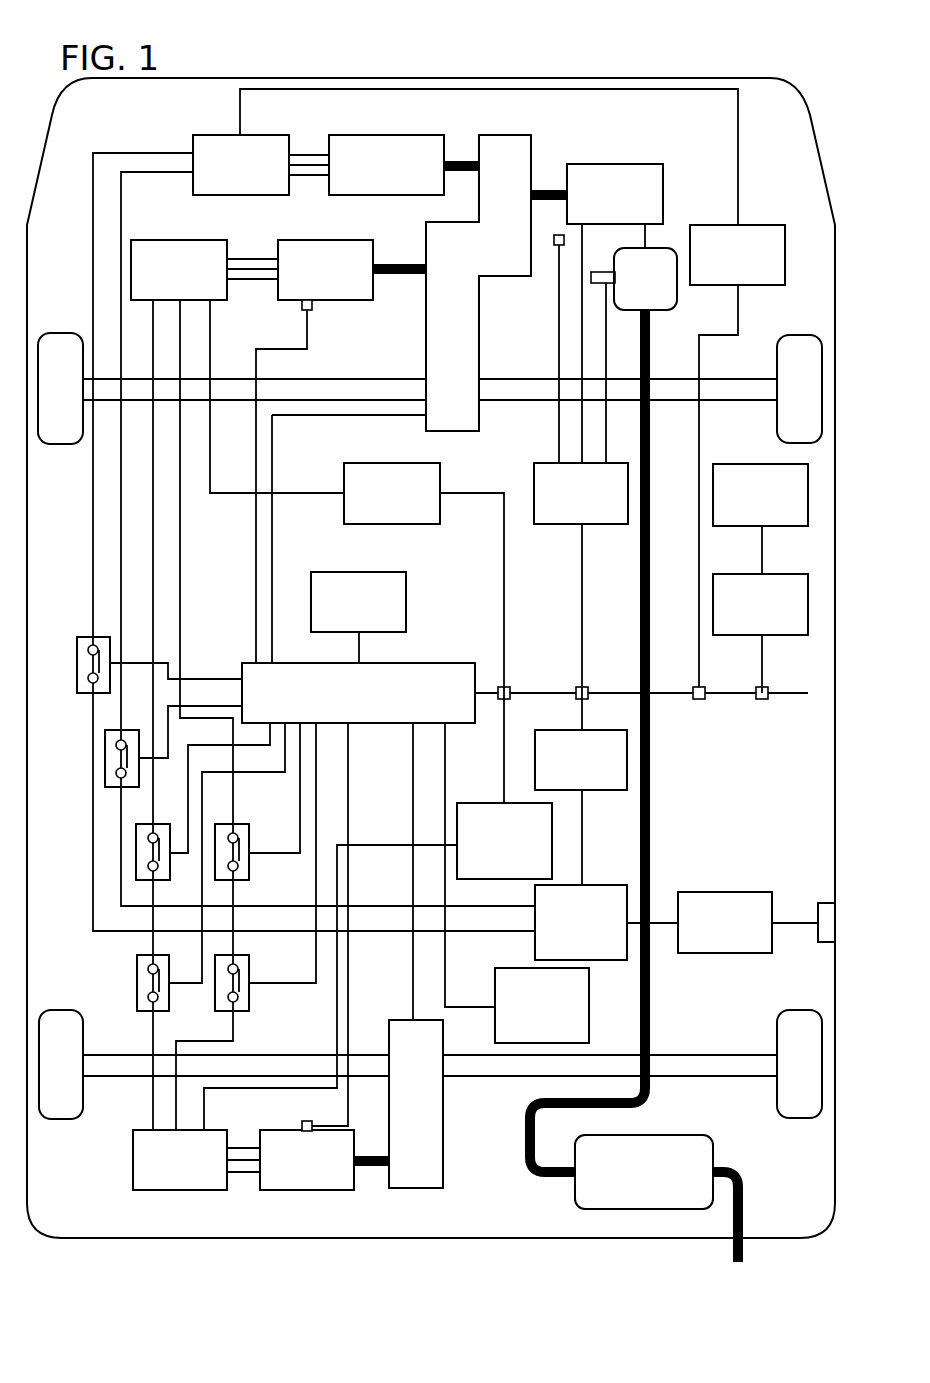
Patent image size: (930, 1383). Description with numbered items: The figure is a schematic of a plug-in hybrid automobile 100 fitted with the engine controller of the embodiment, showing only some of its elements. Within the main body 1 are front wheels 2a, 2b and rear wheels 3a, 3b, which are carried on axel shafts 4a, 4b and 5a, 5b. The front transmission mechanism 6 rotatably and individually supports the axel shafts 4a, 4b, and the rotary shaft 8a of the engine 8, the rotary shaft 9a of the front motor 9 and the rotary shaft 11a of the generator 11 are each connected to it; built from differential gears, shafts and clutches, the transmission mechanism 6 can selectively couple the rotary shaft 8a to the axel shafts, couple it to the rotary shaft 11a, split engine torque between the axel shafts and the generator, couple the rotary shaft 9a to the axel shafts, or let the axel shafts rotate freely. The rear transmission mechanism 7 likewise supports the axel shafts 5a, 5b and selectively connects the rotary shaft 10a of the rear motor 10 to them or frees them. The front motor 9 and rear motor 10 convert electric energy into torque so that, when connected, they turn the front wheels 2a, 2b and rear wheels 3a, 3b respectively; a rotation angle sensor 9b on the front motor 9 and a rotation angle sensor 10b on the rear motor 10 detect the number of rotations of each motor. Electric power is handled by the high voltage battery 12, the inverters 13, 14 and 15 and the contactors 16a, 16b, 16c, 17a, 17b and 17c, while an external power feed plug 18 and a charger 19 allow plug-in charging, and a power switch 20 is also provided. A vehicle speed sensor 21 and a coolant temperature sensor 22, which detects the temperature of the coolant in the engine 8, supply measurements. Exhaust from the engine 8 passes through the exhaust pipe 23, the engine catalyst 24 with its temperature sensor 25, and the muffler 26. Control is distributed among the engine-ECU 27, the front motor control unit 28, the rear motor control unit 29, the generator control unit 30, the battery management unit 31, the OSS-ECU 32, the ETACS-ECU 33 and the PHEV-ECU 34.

The automobile 100 is at (692, 70).
The main body 1 is at (563, 76).
The front wheel 2a is at (59, 333).
The front wheel 2b is at (797, 335).
The rear wheel 3a is at (61, 1010).
The rear wheel 3b is at (794, 1010).
The axel shaft 4a is at (232, 379).
The axel shaft 4b is at (671, 403).
The axel shaft 5a is at (109, 1055).
The axel shaft 5b is at (693, 1055).
The transmission mechanism 6 is at (480, 330).
The transmission mechanism 7 is at (443, 1125).
The engine 8 is at (641, 164).
The rotary shaft 8a is at (551, 190).
The front motor 9 is at (323, 240).
The rotary shaft 9a is at (394, 264).
The rotation angle sensor 9b is at (313, 309).
The rear motor 10 is at (288, 1190).
The rotary shaft 10a is at (375, 1167).
The rotation angle sensor 10b is at (302, 1125).
The generator 11 is at (396, 135).
The rotary shaft 11a is at (458, 160).
The high voltage battery 12 is at (608, 885).
The inverter 13 is at (163, 240).
The inverter 14 is at (133, 1150).
The inverter 15 is at (273, 135).
The contactor 16a is at (136, 846).
The contactor 16b is at (165, 1012).
The contactor 16c is at (78, 637).
The contactor 17a is at (249, 825).
The contactor 17b is at (249, 1001).
The contactor 17c is at (105, 751).
The external power feed plug 18 is at (822, 903).
The charger 19 is at (722, 892).
The power switch 20 is at (737, 464).
The vehicle speed sensor 21 is at (500, 968).
The coolant temperature sensor 22 is at (553, 241).
The exhaust pipe 23 is at (649, 242).
The engine catalyst 24 is at (677, 296).
The temperature sensor 25 is at (600, 272).
The muffler 26 is at (681, 1135).
The engine-ECU 27 is at (553, 524).
The front motor control unit 28 is at (382, 455).
The rear motor control unit 29 is at (470, 803).
The generator control unit 30 is at (765, 218).
The battery management unit 31 is at (572, 730).
The OSS-ECU 32 is at (797, 566).
The ETACS-ECU 33 is at (406, 592).
The PHEV-ECU 34 is at (458, 663).